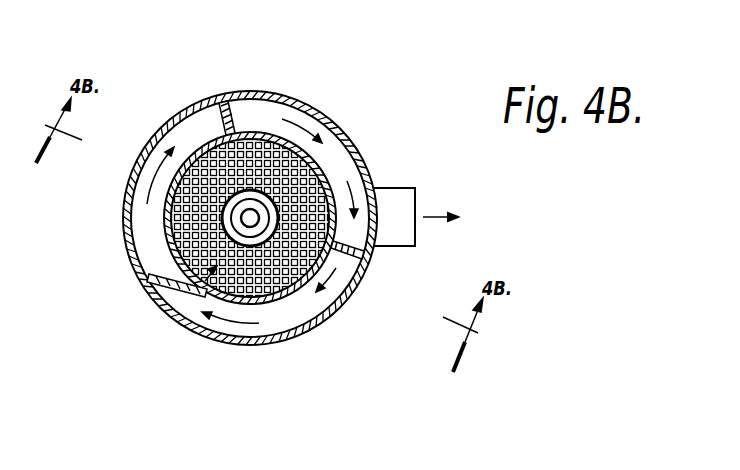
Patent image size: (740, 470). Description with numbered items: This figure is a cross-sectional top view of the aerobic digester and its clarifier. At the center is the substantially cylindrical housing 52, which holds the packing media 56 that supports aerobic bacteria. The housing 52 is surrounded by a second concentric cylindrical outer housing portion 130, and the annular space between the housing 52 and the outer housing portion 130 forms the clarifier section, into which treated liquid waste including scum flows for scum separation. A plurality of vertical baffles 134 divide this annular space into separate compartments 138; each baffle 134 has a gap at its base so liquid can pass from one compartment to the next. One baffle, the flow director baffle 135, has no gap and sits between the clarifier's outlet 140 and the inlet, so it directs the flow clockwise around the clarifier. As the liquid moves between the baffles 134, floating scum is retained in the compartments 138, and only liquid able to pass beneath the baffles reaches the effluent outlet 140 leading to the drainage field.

The cylindrical housing 52 is at (215, 133).
The packing media 56 is at (190, 288).
The outer housing portion 130 is at (352, 137).
The vertical baffles 134 is at (247, 110).
The flow director baffle 135 is at (347, 262).
The compartments 138 is at (274, 110).
The effluent outlet 140 is at (398, 197).